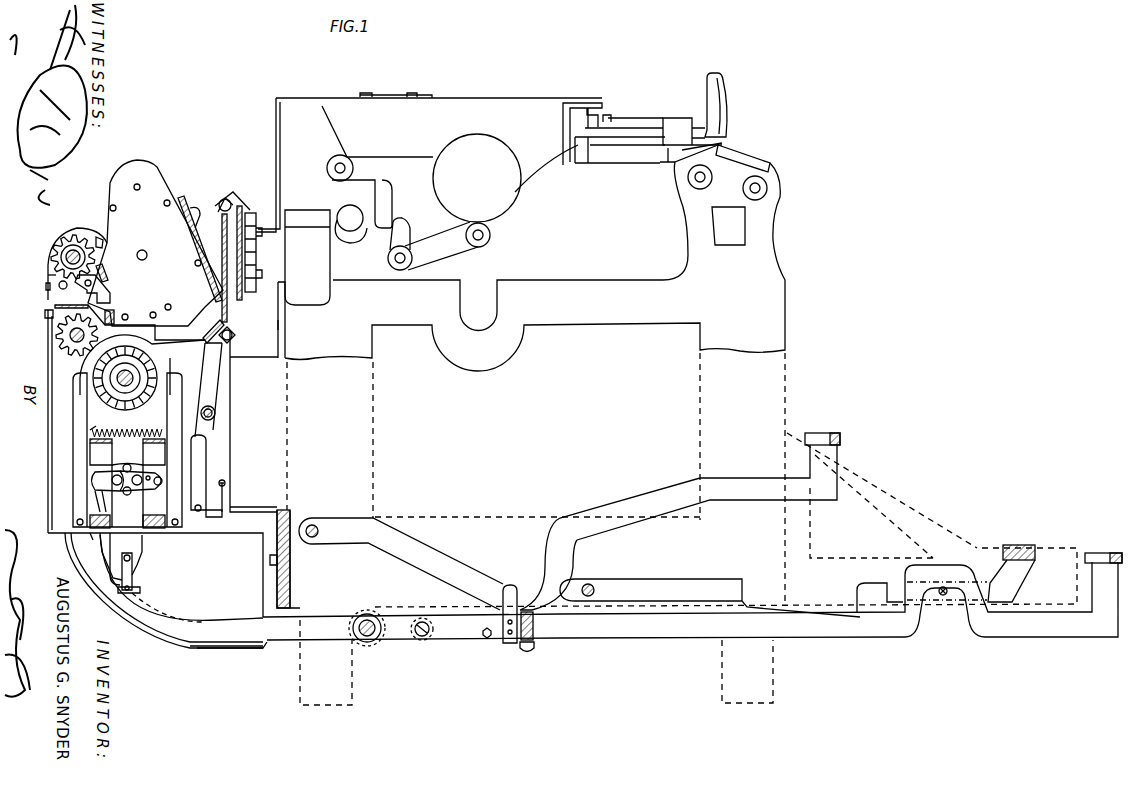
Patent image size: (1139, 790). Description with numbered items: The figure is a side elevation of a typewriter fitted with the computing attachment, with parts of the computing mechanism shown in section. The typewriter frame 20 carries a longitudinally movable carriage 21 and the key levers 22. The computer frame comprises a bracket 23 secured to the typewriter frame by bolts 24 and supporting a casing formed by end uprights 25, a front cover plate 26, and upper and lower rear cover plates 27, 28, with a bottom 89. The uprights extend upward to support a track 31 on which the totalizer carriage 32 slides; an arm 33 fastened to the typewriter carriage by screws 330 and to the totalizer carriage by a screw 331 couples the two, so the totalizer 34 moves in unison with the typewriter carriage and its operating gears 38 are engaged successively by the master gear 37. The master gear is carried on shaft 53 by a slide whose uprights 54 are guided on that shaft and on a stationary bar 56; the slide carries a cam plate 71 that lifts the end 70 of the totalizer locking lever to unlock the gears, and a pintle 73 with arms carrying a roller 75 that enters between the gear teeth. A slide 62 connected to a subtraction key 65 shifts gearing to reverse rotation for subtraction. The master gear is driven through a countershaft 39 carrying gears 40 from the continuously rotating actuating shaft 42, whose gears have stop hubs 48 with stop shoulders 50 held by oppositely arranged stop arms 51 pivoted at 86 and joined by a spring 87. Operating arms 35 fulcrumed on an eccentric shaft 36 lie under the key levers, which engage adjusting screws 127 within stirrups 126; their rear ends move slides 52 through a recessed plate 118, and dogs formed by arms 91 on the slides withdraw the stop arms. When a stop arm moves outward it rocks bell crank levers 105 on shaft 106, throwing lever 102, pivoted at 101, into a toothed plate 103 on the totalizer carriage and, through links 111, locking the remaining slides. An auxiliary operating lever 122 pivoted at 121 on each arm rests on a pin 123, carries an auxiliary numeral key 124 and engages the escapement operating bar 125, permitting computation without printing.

The typewriter frame 20 is at (655, 312).
The carriage 21 is at (530, 108).
The key lever 22 is at (670, 485).
The bracket 23 is at (318, 616).
The bolts 24 is at (270, 562).
The end uprights 25 is at (50, 498).
The front cover plate 26 is at (230, 437).
The upper rear cover plate 27 is at (48, 360).
The lower rear cover plate 28 is at (102, 600).
The track 31 is at (229, 195).
The totalizer carriage 32 is at (221, 218).
The arm 33 is at (298, 97).
The totalizer 34 is at (155, 243).
The operating arms 35 is at (237, 641).
The shaft 36 is at (380, 617).
The master gear 37 is at (50, 260).
The operating gears 38 is at (97, 240).
The countershaft 39 is at (60, 337).
The gears 40 is at (46, 315).
The actuating shaft 42 is at (112, 387).
The stop hub 48 is at (152, 355).
The stop shoulders 50 is at (172, 386).
The stop arms 51 is at (92, 432).
The slides 52 is at (121, 562).
The shaft 53 is at (70, 250).
The uprights 54 is at (48, 274).
The stationary bar 56 is at (55, 305).
The slide 62 is at (46, 287).
The subtraction key 65 is at (280, 325).
The end of locking lever 70 is at (114, 311).
The cam plate 71 is at (130, 326).
The pintle 73 is at (106, 291).
The roller 75 is at (104, 274).
The pivot 86 is at (72, 533).
The spring 87 is at (92, 433).
The bottom of computer casing 89 is at (94, 534).
The arms 91 is at (118, 474).
The pivot 101 is at (216, 413).
The lever 102 is at (214, 385).
The plate 103 is at (207, 334).
The bell crank levers 105 is at (207, 485).
The shaft 106 is at (207, 516).
The links 111 is at (157, 476).
The recessed plate 118 is at (133, 568).
The pivot 121 is at (423, 637).
The auxiliary operating lever 122 is at (668, 632).
The pin 123 is at (487, 640).
The auxiliary numeral key 124 is at (1100, 553).
The escapement operating bar 125 is at (943, 596).
The stirrups 126 is at (510, 584).
The adjusting screws 127 is at (530, 652).
The screws 330 is at (410, 93).
The screw 331 is at (257, 252).